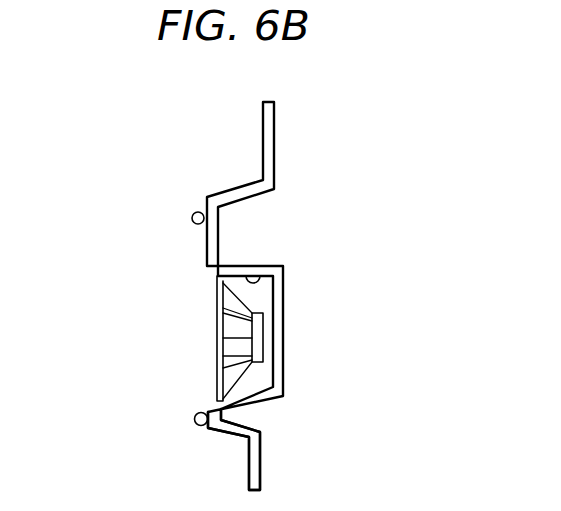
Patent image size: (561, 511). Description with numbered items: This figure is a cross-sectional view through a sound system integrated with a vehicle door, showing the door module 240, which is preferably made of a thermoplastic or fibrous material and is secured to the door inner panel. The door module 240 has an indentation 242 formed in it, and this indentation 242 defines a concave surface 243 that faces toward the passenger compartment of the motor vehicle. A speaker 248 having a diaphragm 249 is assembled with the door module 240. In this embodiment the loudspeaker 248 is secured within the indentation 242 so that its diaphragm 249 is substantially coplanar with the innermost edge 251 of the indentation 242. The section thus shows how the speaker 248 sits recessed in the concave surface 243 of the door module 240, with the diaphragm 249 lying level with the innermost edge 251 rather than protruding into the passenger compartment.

The door module 240 is at (195, 206).
The indentation 242 is at (285, 363).
The concave surface 243 is at (245, 266).
The speaker 248 is at (242, 329).
The diaphragm 249 is at (213, 375).
The innermost edge 251 is at (206, 268).